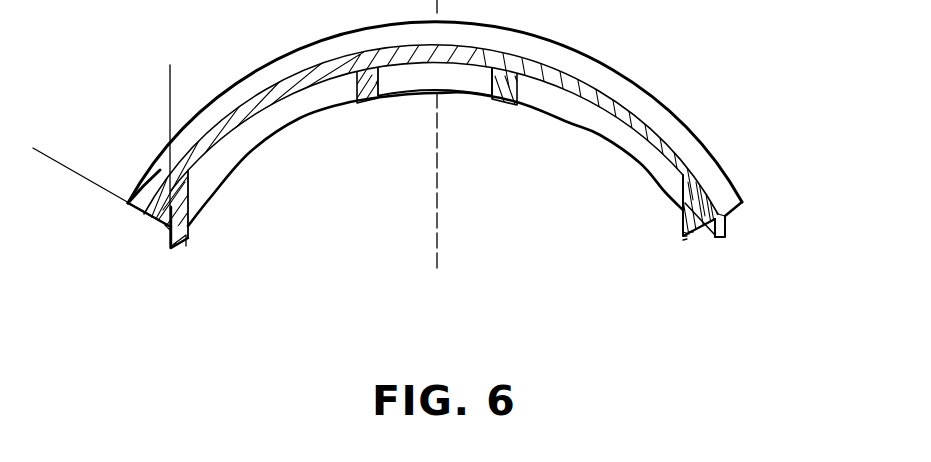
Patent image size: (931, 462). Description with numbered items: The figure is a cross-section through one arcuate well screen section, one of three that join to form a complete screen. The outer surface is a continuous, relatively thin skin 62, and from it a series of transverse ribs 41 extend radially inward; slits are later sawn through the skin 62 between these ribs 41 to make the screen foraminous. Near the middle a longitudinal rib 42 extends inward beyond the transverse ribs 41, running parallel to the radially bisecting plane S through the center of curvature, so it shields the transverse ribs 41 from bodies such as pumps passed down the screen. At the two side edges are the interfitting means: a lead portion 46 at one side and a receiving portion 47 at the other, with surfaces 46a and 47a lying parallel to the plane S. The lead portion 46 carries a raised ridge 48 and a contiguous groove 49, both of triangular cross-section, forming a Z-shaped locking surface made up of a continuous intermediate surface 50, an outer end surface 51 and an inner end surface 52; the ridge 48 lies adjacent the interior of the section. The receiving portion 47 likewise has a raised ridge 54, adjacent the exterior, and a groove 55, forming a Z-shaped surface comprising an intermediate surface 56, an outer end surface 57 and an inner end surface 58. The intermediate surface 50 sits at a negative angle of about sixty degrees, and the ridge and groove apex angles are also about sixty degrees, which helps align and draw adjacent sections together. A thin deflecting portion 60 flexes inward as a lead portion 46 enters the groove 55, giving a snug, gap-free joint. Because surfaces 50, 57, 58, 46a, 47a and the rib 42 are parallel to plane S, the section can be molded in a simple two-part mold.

The transverse ribs 41 is at (610, 153).
The longitudinal ribs 42 is at (493, 100).
The lead portion 46 is at (136, 222).
The surface of the interfitting means on the lead portion 46a is at (190, 203).
The receiving portion 47 is at (681, 210).
The surface of the interfitting means on the receiving portion 47a is at (683, 233).
The raised ridge 48 is at (190, 226).
The groove 49 is at (170, 247).
The intermediate surface 50 is at (166, 230).
The outer end surface 51 is at (167, 228).
The inner end surface 52 is at (175, 248).
The raised ridge 54 is at (722, 230).
The groove 55 is at (691, 232).
The intermediate surface 56 is at (716, 240).
The outer end surface 57 is at (737, 216).
The inner end surface 58 is at (684, 237).
The deflecting portion 60 is at (683, 240).
The skin 62 is at (596, 90).
The radially bisecting plane S is at (438, 240).